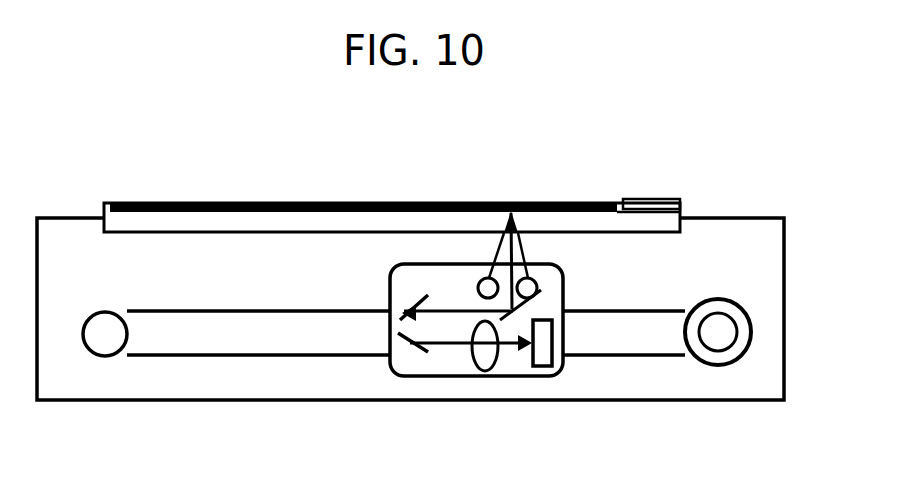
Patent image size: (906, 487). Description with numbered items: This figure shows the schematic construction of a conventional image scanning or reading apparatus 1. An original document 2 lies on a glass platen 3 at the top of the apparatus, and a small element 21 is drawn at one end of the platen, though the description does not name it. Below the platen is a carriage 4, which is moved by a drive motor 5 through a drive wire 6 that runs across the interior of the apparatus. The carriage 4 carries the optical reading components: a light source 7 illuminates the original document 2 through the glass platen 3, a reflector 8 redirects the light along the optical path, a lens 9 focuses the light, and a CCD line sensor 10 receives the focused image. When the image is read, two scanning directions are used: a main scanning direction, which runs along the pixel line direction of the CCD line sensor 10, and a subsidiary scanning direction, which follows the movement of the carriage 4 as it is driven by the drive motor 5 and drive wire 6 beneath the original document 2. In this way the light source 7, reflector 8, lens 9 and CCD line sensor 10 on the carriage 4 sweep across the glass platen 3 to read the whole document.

The image reading apparatus 1 is at (720, 218).
The original document 2 is at (210, 203).
The glass platen 3 is at (115, 207).
The reference plate 21 is at (645, 198).
The carriage 4 is at (445, 382).
The drive motor 5 is at (742, 357).
The drive wire 6 is at (612, 358).
The light source 7 is at (543, 284).
The reflector 8 is at (392, 304).
The lens 9 is at (475, 380).
The CCD line sensor 10 is at (548, 382).